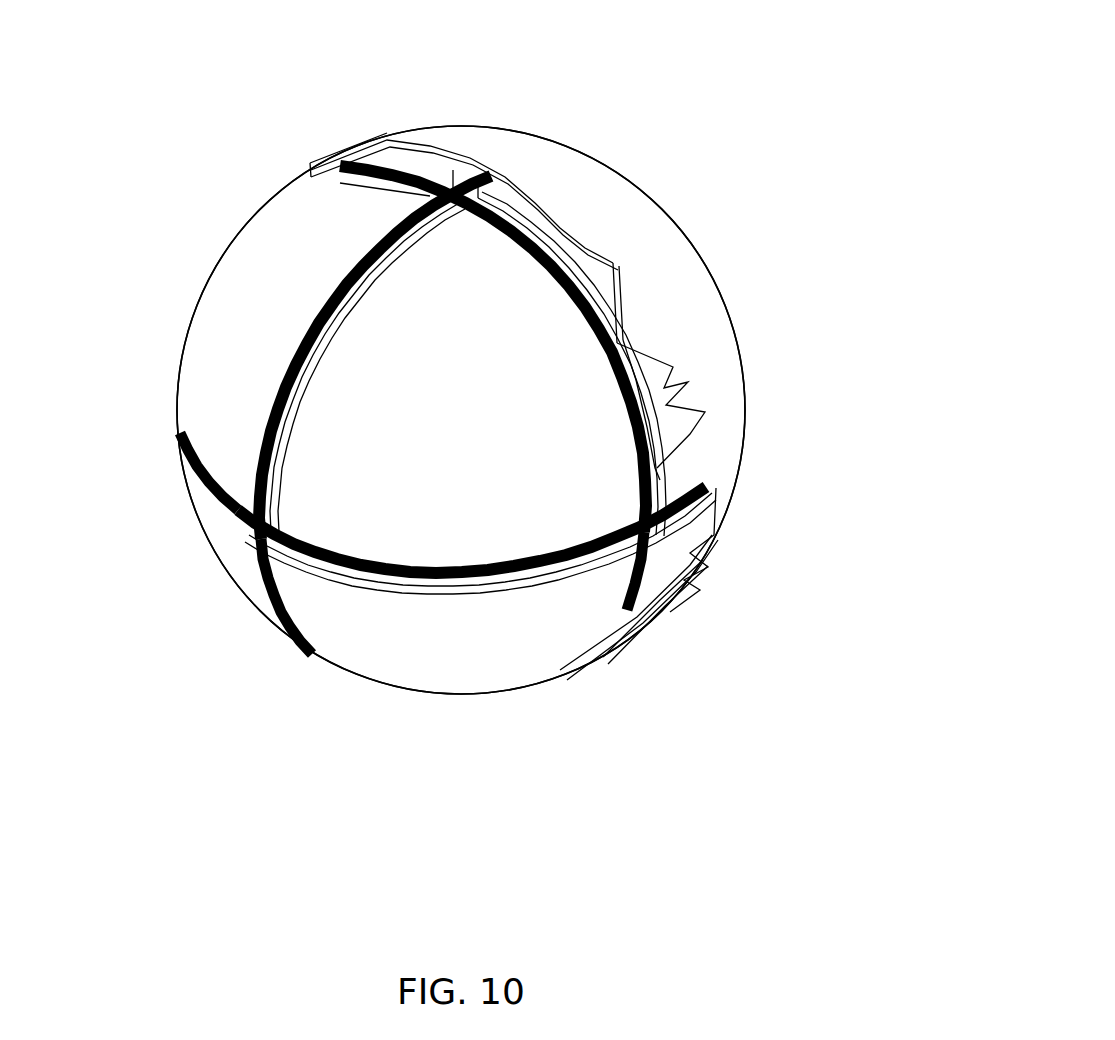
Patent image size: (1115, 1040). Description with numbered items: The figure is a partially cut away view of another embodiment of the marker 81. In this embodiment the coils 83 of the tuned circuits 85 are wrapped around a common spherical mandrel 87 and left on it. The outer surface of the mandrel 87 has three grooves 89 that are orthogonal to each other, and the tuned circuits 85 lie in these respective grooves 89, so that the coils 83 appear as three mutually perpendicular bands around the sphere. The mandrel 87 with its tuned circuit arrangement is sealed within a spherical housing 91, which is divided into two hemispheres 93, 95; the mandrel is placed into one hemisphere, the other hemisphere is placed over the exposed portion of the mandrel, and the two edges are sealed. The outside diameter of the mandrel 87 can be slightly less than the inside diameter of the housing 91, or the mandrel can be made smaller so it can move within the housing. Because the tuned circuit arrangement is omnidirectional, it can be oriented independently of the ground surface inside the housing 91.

The marker 81 is at (614, 138).
The coils 83 is at (320, 333).
The tuned circuits 85 is at (360, 267).
The spherical mandrel 87 is at (186, 340).
The grooves 89 is at (330, 571).
The spherical housing 91 is at (628, 232).
The hemisphere 93 is at (678, 310).
The hemisphere 95 is at (722, 512).